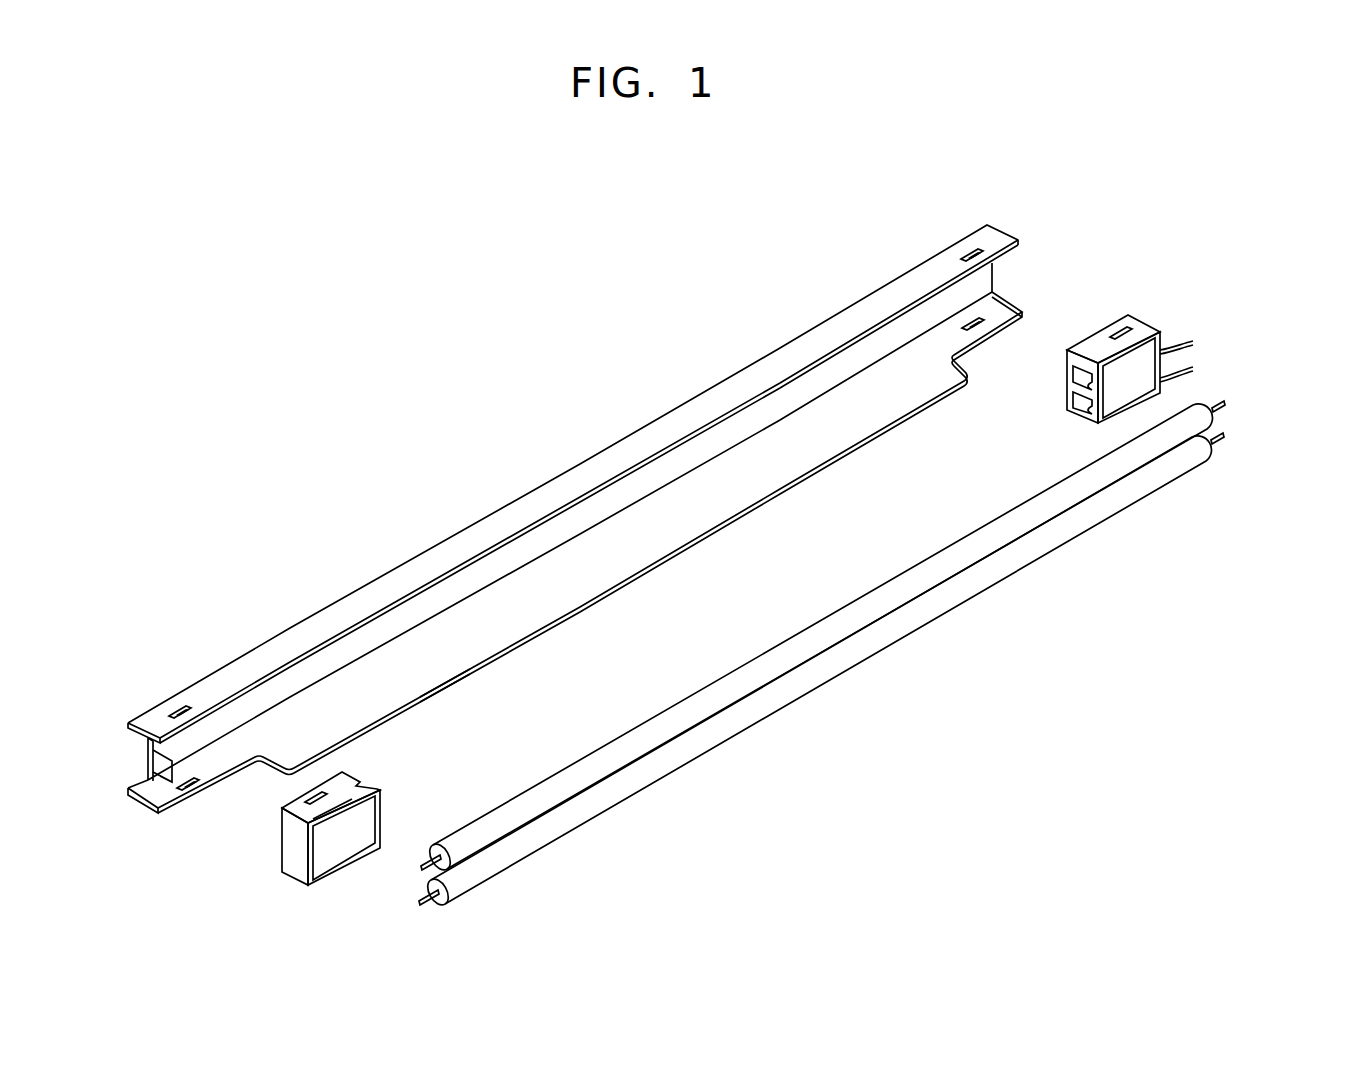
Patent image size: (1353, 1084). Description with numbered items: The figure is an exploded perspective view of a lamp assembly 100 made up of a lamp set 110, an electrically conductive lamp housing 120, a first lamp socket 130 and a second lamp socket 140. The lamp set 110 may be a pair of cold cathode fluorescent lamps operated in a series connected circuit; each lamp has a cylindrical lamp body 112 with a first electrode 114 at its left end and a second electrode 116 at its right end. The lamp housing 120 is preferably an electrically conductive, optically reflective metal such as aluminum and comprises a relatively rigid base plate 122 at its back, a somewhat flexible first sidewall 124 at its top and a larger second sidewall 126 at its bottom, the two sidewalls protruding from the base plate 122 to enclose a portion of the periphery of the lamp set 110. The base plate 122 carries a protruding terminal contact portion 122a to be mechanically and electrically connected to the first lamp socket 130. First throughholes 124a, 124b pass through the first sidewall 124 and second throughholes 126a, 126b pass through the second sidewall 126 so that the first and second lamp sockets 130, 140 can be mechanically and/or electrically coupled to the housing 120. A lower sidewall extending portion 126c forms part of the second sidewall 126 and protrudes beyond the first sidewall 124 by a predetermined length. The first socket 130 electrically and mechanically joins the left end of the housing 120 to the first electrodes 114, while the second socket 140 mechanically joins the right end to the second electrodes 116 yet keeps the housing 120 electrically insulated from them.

The lamp assembly 100 is at (528, 178).
The set of fluorescent lamps 110 is at (857, 582).
The cylindrical lamp body 112 is at (645, 726).
The first electrode 114 is at (418, 876).
The second electrode 116 is at (1222, 403).
The lamp housing 120 is at (999, 217).
The base plate 122 is at (996, 276).
The protruding terminal contact portion 122a is at (166, 774).
The first sidewall 124 is at (1008, 234).
The first throughhole 124a is at (183, 700).
The first throughhole 124b is at (975, 248).
The second sidewall 126 is at (1012, 302).
The second throughhole 126a is at (191, 791).
The second throughhole 126b is at (985, 331).
The lower sidewall extending portion 126c is at (441, 667).
The first lamp socket 130 is at (276, 893).
The second lamp socket 140 is at (1157, 309).